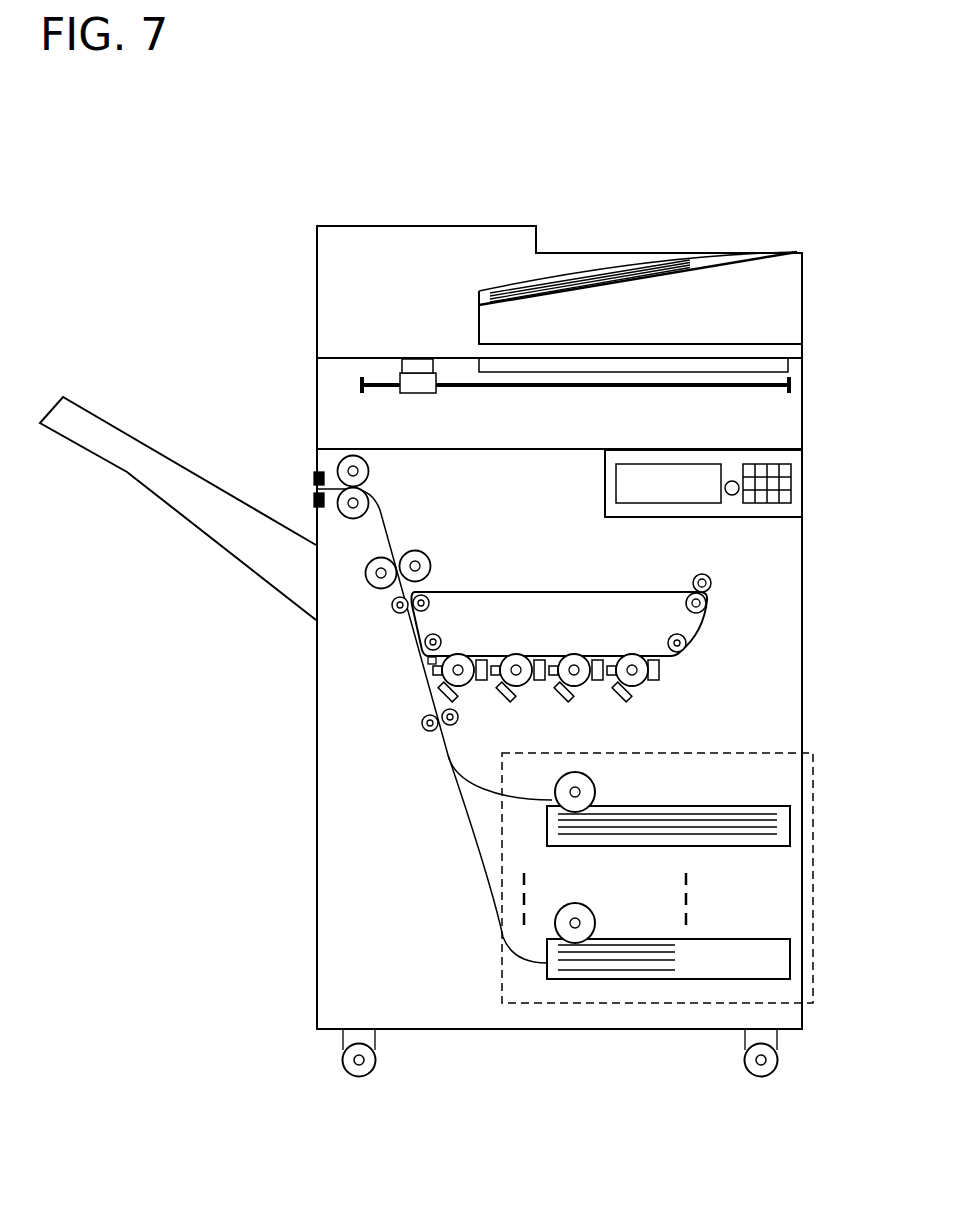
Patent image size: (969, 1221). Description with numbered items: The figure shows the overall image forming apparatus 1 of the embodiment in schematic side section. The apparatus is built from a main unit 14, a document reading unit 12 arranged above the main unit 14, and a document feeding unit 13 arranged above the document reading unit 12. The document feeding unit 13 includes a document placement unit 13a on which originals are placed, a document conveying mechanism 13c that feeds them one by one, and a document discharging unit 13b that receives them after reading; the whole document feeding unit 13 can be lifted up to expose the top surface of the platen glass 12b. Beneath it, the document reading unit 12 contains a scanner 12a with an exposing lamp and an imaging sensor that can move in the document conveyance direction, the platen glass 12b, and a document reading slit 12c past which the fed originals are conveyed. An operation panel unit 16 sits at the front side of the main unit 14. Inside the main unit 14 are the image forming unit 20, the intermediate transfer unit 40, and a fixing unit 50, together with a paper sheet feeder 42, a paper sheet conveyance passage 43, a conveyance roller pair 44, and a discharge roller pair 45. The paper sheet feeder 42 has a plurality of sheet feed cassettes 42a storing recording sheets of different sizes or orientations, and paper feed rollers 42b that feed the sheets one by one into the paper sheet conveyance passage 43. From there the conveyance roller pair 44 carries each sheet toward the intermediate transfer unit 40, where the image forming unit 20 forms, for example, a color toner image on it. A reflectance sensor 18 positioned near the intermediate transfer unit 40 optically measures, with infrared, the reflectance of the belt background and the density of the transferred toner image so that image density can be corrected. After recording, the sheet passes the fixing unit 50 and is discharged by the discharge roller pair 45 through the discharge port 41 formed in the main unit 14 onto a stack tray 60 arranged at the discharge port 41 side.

The image forming apparatus 1 is at (250, 260).
The document reading unit 12 is at (304, 395).
The scanner 12a is at (421, 392).
The platen glass 12b is at (783, 366).
The document reading slit 12c is at (421, 361).
The document feeding unit 13 is at (304, 292).
The document placement unit 13a is at (700, 270).
The document discharging unit 13b is at (667, 344).
The document conveying mechanism 13c is at (428, 232).
The main unit 14 is at (817, 712).
The operation panel unit 16 is at (797, 502).
The reflectance sensor 18 is at (427, 661).
The image forming unit 20 is at (556, 707).
The intermediate transfer unit 40 is at (546, 576).
The discharge port 41 is at (316, 490).
The paper sheet feeder 42 is at (813, 810).
The sheet feed cassette 42a is at (716, 805).
The paper feed roller 42b is at (597, 795).
The paper sheet conveyance passage 43 is at (440, 737).
The conveyance roller pair 44 is at (421, 722).
The discharge roller pair 45 is at (370, 470).
The fixing unit 50 is at (427, 553).
The stack tray 60 is at (200, 545).